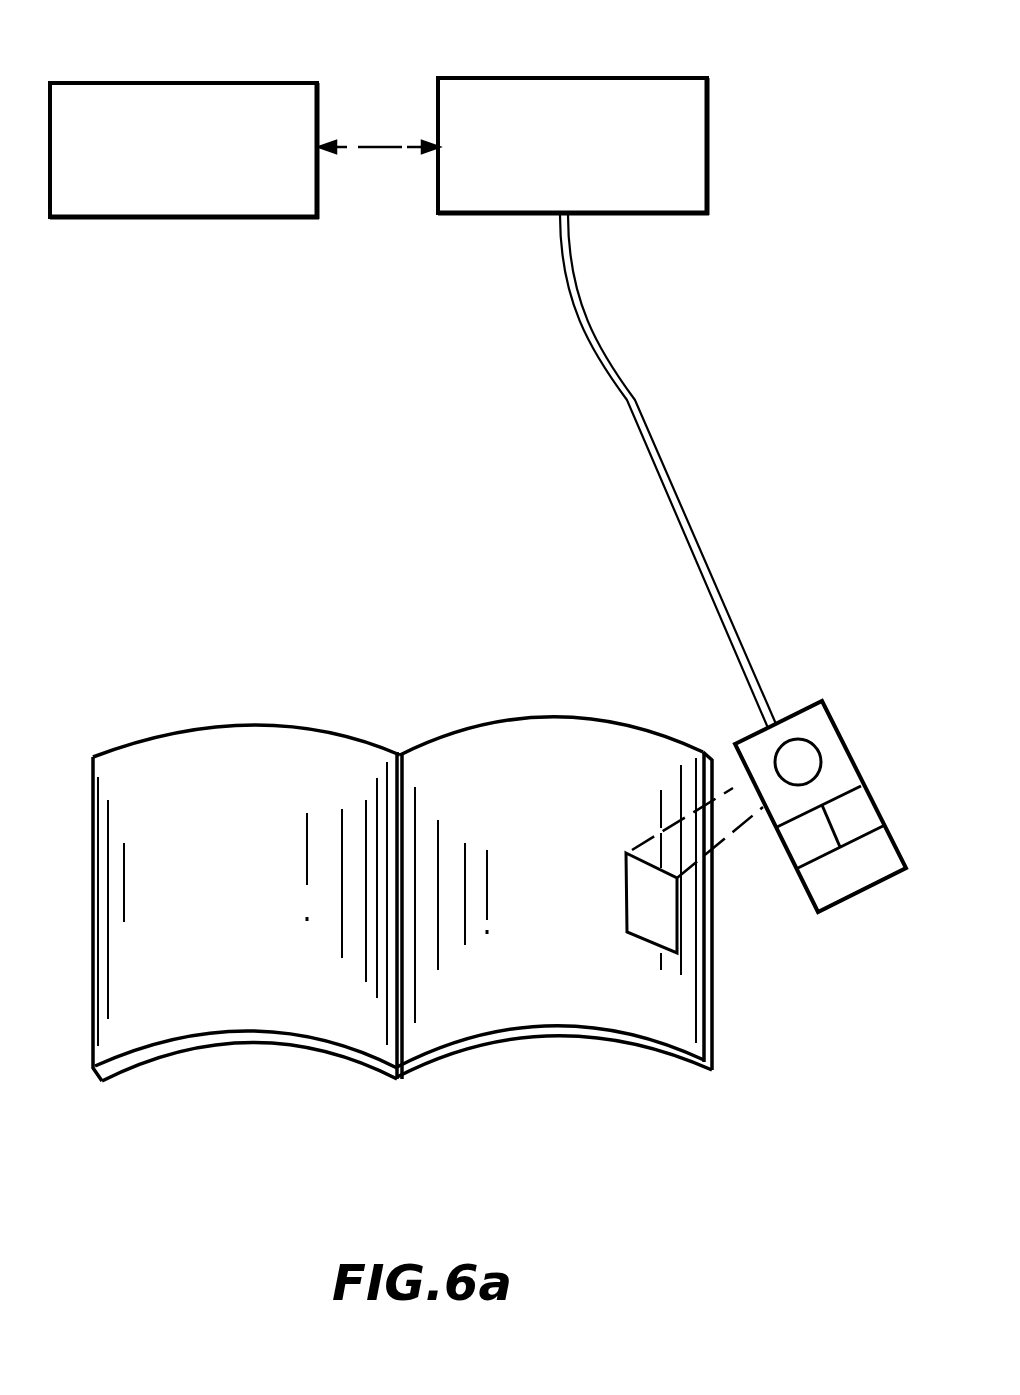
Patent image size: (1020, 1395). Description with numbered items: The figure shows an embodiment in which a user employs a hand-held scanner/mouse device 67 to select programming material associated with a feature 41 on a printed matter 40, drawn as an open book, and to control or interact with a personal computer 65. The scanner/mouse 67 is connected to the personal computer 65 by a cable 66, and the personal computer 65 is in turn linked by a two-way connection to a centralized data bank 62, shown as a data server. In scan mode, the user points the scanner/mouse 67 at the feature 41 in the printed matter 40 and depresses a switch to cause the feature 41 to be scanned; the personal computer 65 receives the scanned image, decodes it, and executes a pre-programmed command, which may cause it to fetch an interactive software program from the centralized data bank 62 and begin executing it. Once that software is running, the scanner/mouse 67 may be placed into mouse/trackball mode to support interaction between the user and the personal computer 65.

The centralized data bank 62 is at (263, 83).
The personal computer 65 is at (668, 77).
The cable 66 is at (662, 488).
The hand-held scanner/mouse device 67 is at (861, 786).
The printed matter 40 is at (292, 725).
The feature 41 is at (677, 922).